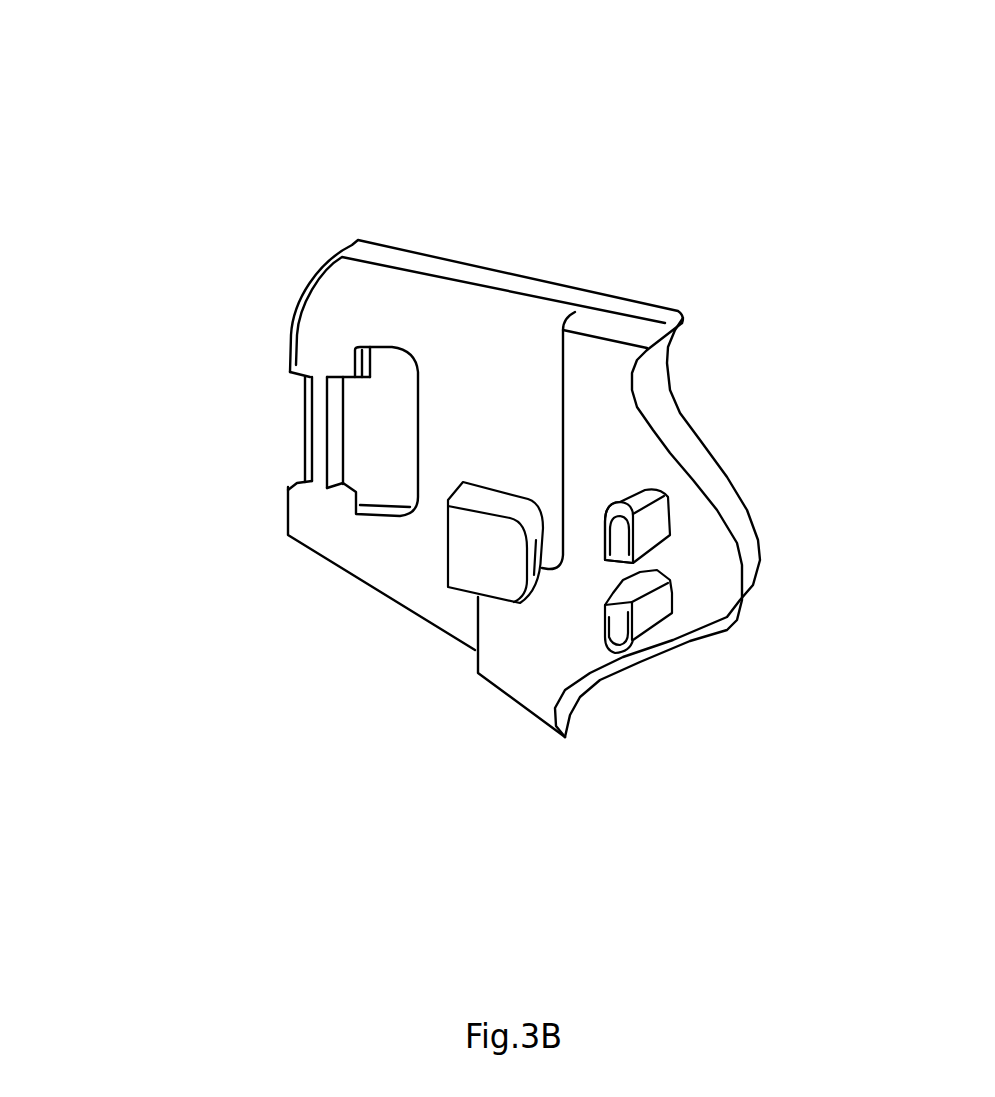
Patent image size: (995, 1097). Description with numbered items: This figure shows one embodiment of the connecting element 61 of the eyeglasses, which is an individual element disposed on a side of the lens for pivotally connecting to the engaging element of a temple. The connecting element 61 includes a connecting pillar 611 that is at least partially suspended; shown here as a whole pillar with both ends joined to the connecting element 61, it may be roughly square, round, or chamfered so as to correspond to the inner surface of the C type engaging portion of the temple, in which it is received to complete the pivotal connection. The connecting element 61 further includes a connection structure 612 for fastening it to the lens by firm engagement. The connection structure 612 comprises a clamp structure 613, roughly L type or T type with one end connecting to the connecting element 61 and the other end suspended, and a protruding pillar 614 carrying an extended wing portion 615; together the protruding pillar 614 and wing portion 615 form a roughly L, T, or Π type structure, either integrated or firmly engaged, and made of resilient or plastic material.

The connecting element 61 is at (91, 63).
The connecting pillar 611 is at (317, 440).
The connection structure 612 is at (832, 117).
The clamp structure 613 is at (478, 530).
The protruding pillar 614 is at (648, 515).
The wing portion 615 is at (618, 637).